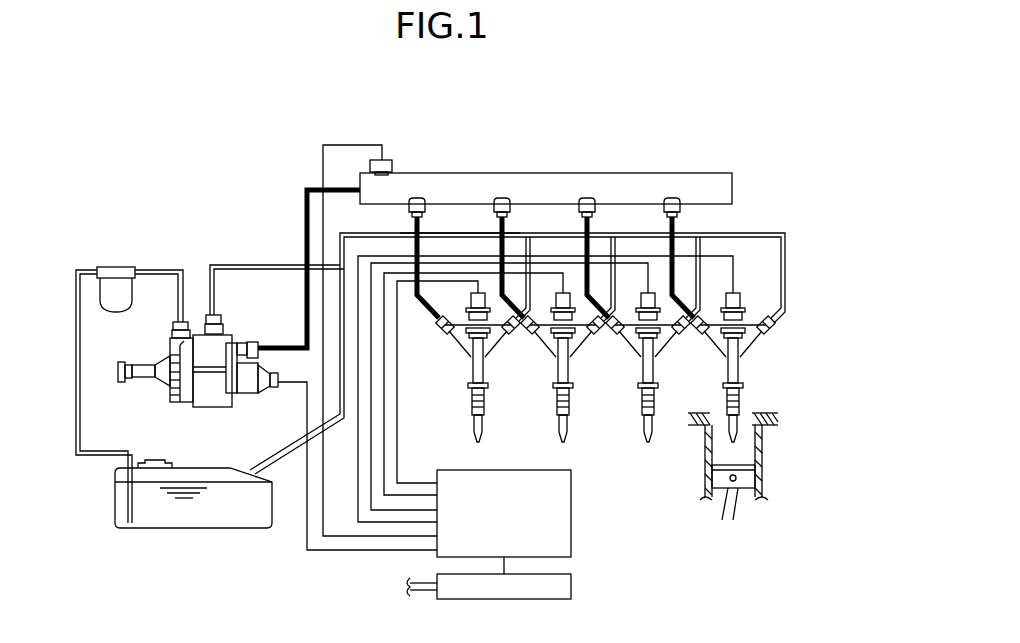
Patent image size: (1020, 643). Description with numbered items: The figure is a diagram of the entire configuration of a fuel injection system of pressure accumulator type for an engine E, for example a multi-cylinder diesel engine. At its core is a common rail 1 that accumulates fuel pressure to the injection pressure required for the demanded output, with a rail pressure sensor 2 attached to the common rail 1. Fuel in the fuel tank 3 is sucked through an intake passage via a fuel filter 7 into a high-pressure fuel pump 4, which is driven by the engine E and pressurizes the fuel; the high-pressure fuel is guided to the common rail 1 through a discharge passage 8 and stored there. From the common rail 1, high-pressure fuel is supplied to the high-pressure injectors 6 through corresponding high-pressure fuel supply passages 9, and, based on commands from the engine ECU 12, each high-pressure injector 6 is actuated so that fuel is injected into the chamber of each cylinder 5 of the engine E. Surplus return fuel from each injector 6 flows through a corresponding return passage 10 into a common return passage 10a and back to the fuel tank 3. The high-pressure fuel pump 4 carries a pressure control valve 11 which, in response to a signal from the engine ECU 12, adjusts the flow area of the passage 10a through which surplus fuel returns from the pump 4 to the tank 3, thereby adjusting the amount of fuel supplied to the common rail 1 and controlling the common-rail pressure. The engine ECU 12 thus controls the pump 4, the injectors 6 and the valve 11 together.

The common rail 1 is at (540, 173).
The rail pressure sensor 2 is at (392, 165).
The fuel tank 3 is at (208, 472).
The high-pressure fuel pump 4 is at (235, 337).
The cylinder 5 is at (740, 448).
The high-pressure injector 6 is at (740, 372).
The fuel filter 7 is at (135, 267).
The discharge passage 8 is at (304, 218).
The high-pressure fuel supply passage 9 is at (676, 272).
The return passage 10 is at (786, 272).
The common return passage 10a is at (452, 233).
The pressure control valve 11 is at (262, 390).
The engine ECU 12 is at (571, 515).
The engine E is at (704, 133).